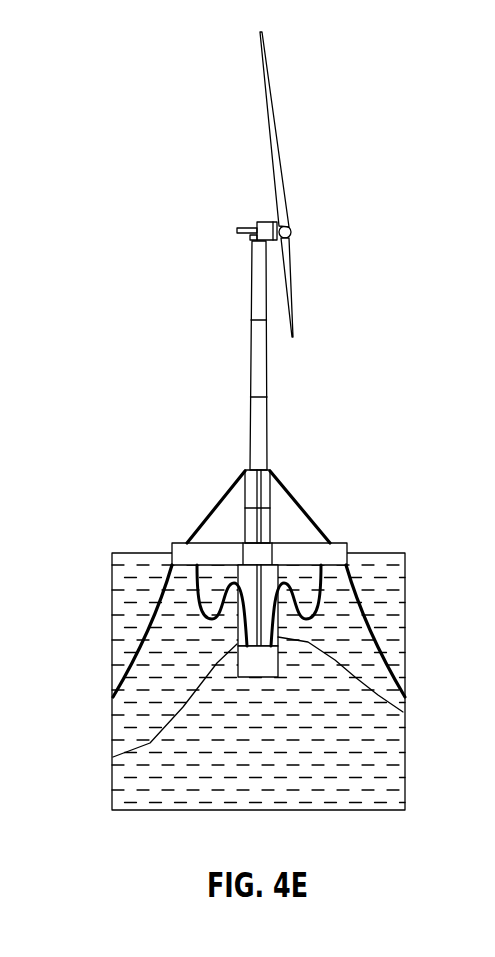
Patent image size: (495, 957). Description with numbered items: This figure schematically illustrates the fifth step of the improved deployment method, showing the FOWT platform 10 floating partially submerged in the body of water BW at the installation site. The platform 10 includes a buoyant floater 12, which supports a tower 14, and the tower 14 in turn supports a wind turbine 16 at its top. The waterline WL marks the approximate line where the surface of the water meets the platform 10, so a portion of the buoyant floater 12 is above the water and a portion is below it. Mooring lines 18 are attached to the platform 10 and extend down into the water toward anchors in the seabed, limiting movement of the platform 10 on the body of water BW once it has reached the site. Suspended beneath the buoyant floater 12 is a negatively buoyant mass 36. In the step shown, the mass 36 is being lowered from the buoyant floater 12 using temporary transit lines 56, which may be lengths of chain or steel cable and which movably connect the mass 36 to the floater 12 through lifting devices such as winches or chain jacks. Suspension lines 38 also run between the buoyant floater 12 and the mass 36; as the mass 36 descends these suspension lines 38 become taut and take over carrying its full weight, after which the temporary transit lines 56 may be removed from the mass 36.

The FOWT platform 10 is at (263, 408).
The buoyant floater 12 is at (204, 503).
The tower 14 is at (250, 430).
The wind turbine 16 is at (310, 228).
The mooring lines 18 is at (263, 628).
The negatively buoyant mass 36 is at (288, 688).
The suspension lines 38 is at (260, 653).
The temporary transit lines 56 is at (113, 757).
The body of water BW is at (378, 565).
The waterline WL is at (143, 553).